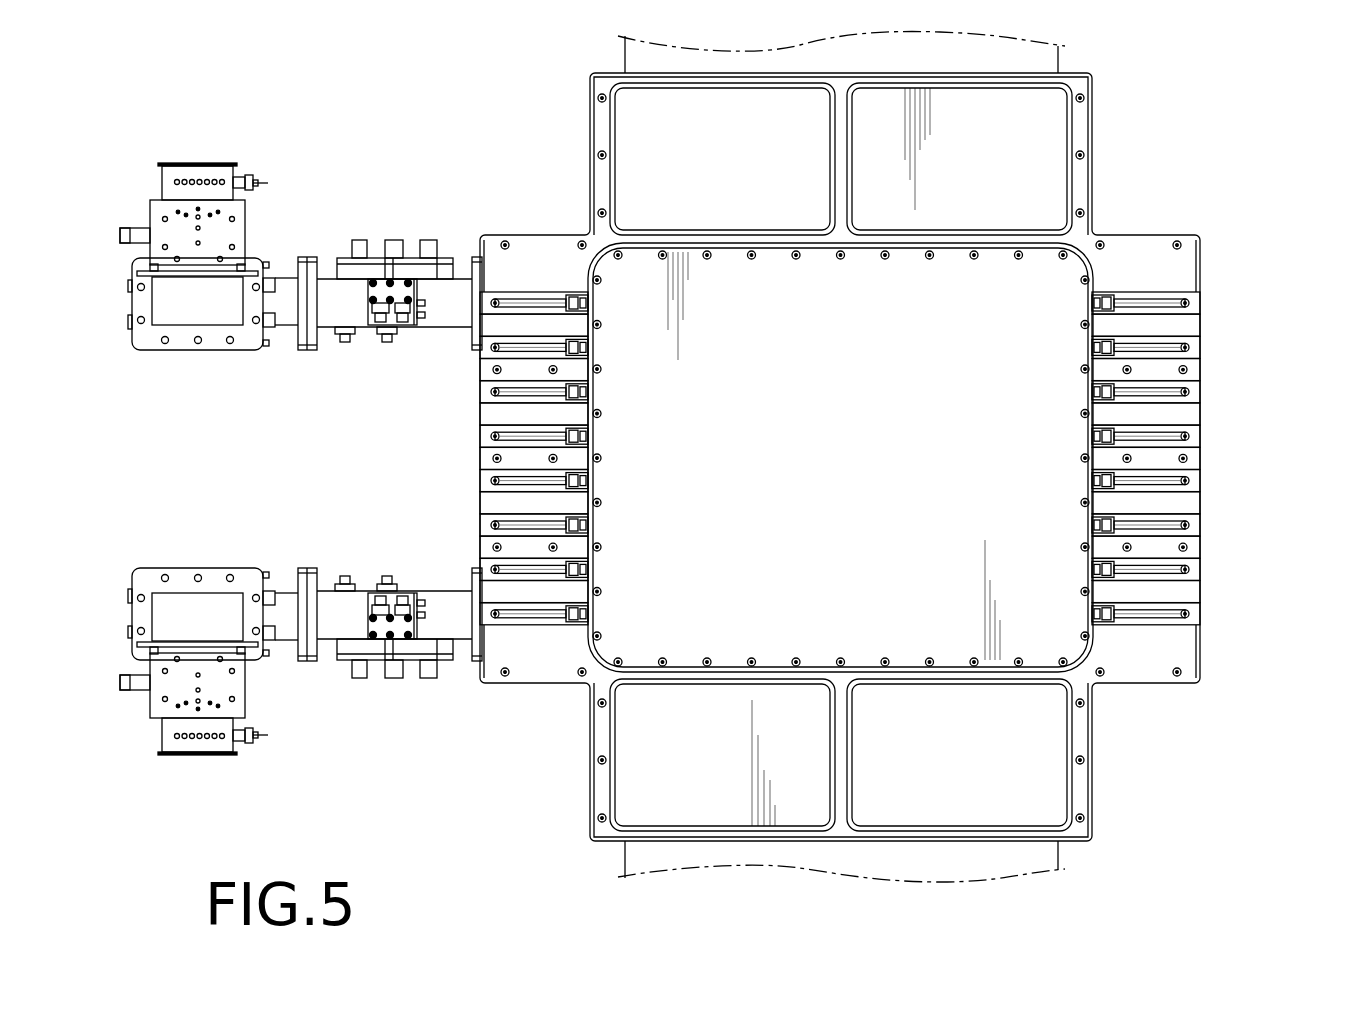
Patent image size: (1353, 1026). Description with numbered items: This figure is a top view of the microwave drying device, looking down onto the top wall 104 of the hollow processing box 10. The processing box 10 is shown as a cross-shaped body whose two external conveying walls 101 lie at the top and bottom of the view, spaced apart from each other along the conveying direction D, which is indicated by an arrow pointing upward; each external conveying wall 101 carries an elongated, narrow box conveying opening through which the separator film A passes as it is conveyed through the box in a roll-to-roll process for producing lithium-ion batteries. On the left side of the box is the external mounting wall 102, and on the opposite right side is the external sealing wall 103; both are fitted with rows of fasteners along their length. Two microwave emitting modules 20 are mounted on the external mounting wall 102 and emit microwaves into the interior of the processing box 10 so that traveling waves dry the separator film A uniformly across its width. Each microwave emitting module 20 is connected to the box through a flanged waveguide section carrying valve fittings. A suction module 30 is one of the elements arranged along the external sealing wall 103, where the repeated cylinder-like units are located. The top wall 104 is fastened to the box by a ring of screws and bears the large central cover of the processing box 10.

The processing box 10 is at (1140, 170).
The microwave emitting module 20 is at (320, 234).
The suction module 30 is at (1165, 570).
The external conveying wall 101 is at (830, 73).
The external mounting wall 102 is at (480, 430).
The external sealing wall 103 is at (1202, 480).
The top wall 104 is at (814, 463).
The separator film A is at (990, 865).
The conveying direction D is at (1285, 437).